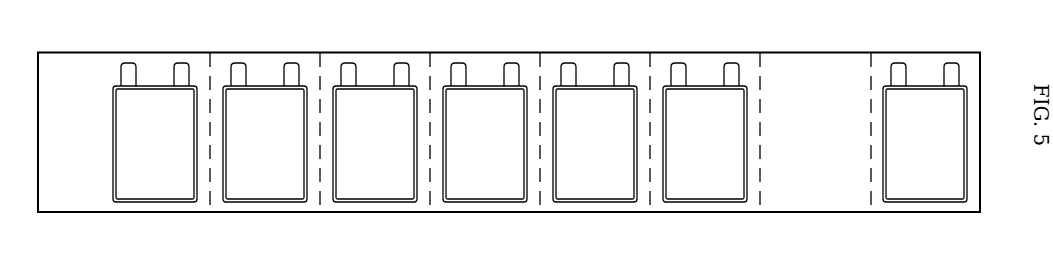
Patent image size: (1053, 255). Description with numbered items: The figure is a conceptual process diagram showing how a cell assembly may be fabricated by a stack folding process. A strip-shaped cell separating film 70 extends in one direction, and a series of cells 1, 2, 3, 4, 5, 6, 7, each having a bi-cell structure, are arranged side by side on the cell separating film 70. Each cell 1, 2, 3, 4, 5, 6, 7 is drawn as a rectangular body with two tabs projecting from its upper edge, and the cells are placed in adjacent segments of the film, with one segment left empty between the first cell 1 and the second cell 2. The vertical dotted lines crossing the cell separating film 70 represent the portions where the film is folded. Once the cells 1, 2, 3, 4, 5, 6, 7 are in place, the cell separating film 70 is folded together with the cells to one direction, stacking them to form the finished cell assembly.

The cell separating film 70 is at (929, 58).
The cell 1 is at (925, 132).
The cell 2 is at (705, 132).
The cell 3 is at (595, 132).
The cell 4 is at (485, 132).
The cell 5 is at (375, 132).
The cell 6 is at (265, 132).
The cell 7 is at (155, 132).